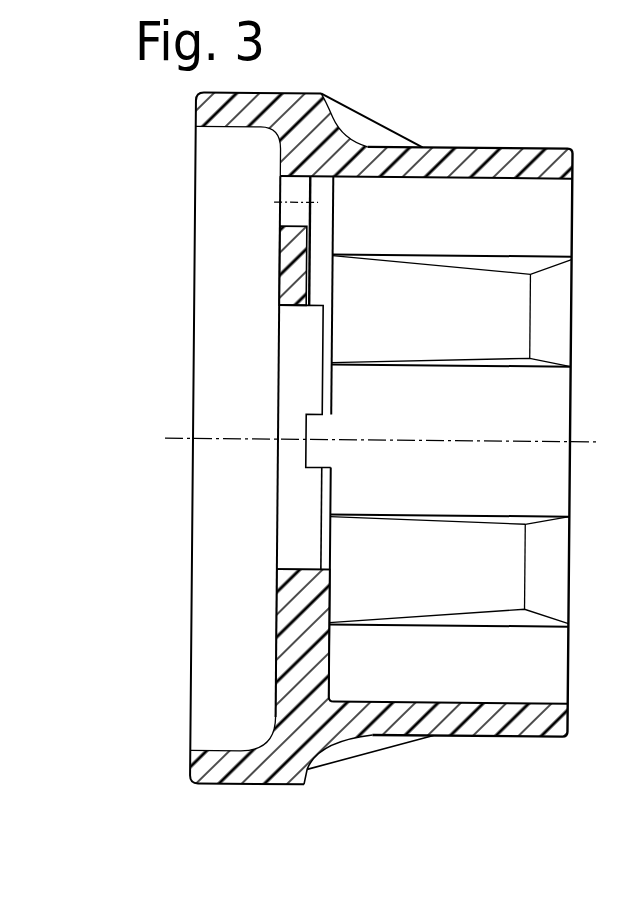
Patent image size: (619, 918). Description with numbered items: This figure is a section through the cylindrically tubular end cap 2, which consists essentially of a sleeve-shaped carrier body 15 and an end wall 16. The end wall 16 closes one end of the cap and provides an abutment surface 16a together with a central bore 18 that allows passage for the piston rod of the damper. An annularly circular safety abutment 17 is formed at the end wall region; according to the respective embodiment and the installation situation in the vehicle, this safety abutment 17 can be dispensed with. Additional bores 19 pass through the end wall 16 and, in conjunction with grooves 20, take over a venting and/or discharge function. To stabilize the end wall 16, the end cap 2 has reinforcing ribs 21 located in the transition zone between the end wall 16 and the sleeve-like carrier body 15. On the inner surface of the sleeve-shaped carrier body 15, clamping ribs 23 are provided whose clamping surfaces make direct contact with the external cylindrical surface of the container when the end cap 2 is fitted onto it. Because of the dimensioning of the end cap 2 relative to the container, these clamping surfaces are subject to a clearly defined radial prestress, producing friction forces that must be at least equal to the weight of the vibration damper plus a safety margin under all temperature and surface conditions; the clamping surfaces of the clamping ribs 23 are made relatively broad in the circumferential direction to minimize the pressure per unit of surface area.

The cylindrically tubular end cap 2 is at (158, 740).
The sleeve-shaped carrier body 15 is at (462, 727).
The end wall 16 is at (275, 643).
The abutment surface 16a is at (274, 673).
The annularly circular safety abutment 17 is at (289, 122).
The central bore 18 is at (284, 311).
The additional bores 19 is at (280, 218).
The grooves 20 is at (323, 240).
The reinforcing ribs 21 is at (362, 132).
The clamping ribs 23 is at (455, 372).